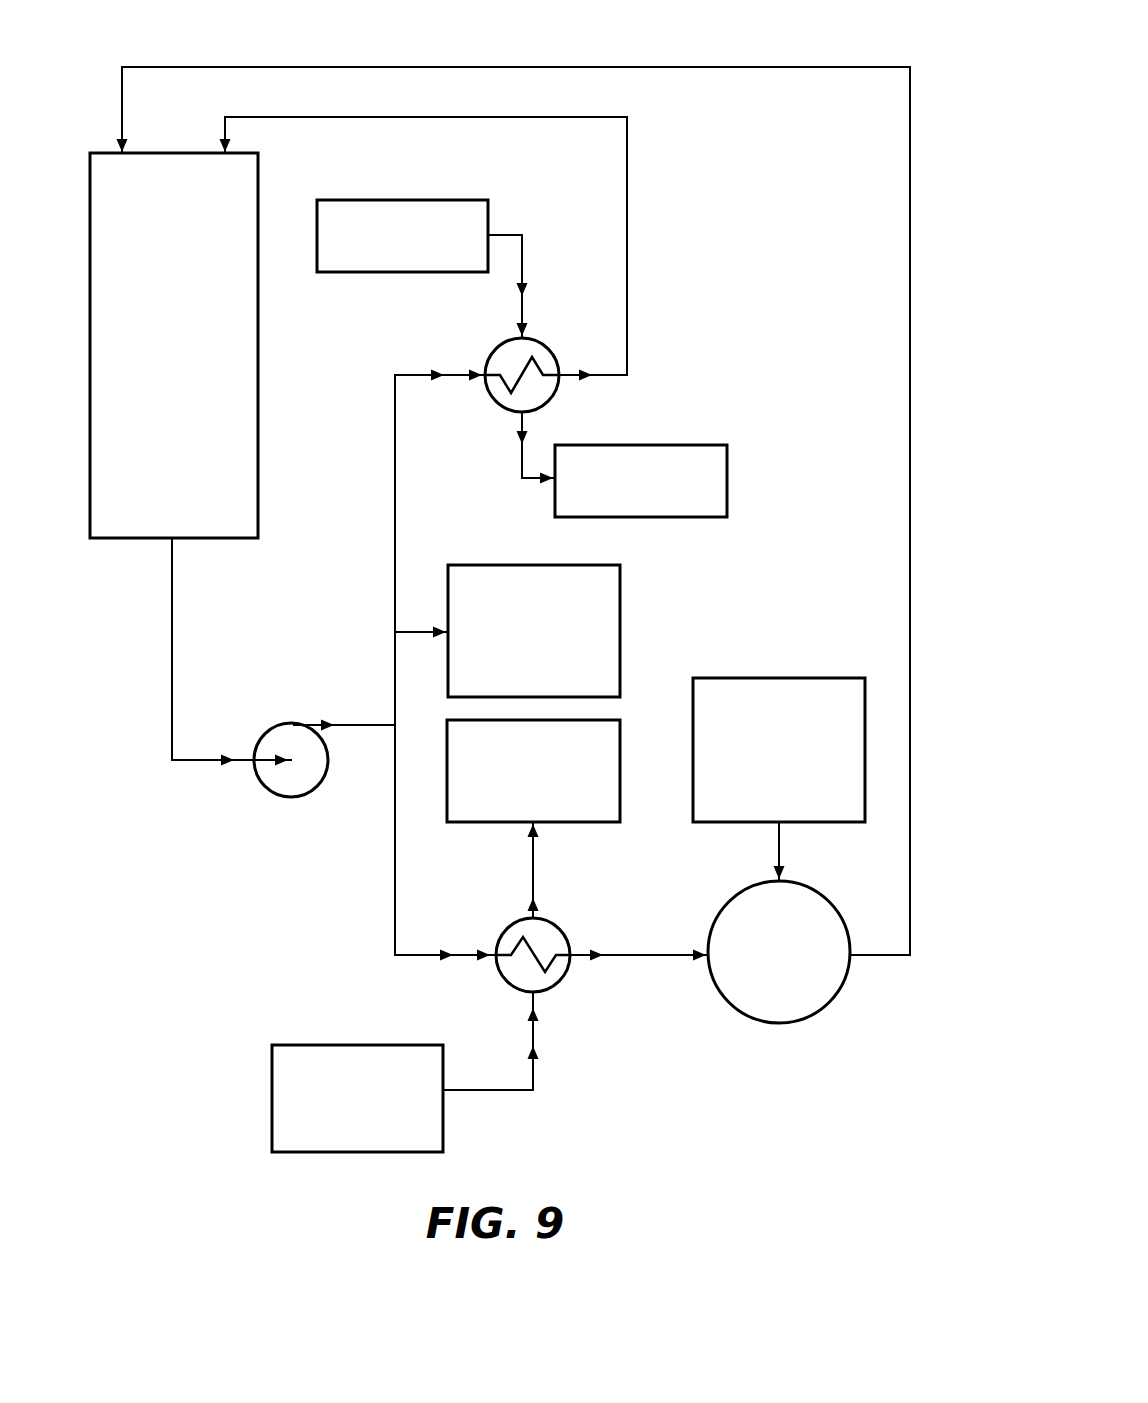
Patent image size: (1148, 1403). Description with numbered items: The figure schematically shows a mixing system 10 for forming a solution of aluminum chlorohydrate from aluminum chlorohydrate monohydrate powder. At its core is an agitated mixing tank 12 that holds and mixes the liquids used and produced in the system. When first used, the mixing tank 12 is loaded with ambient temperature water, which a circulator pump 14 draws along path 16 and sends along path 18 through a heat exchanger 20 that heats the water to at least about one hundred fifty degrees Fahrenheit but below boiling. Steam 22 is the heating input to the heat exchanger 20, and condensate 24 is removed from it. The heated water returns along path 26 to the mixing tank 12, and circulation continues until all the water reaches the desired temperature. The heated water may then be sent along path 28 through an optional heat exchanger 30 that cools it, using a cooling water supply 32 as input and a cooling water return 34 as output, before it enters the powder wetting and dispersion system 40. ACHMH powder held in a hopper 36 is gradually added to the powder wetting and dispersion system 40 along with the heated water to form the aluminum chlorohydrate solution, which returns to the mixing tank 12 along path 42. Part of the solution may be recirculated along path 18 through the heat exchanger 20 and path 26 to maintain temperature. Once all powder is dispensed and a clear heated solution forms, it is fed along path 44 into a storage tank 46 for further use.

The mixing system 10 is at (740, 40).
The mixing tank 12 is at (159, 387).
The circulator pump 14 is at (296, 723).
The path 16 is at (172, 640).
The path 18 is at (395, 466).
The heat exchanger 20 is at (545, 345).
The steam 22 is at (388, 262).
The condensate 24 is at (627, 504).
The path 26 is at (627, 163).
The path 28 is at (395, 916).
The heat exchanger 30 is at (565, 926).
The cooling water supply 32 is at (343, 1137).
The cooling water return 34 is at (520, 807).
The hopper 36 is at (765, 804).
The powder wetting and dispersion system 40 is at (765, 1004).
The path 42 is at (910, 270).
The path 44 is at (400, 631).
The storage tank 46 is at (520, 684).